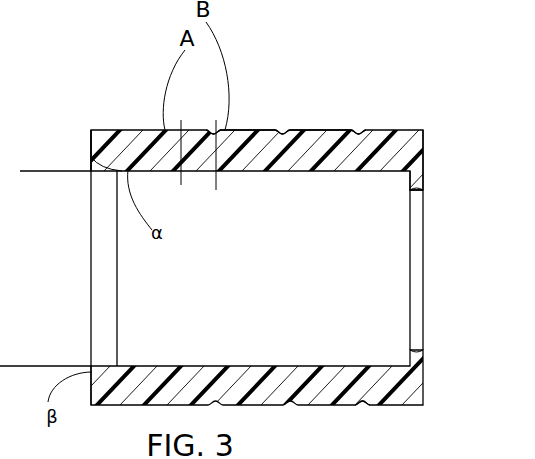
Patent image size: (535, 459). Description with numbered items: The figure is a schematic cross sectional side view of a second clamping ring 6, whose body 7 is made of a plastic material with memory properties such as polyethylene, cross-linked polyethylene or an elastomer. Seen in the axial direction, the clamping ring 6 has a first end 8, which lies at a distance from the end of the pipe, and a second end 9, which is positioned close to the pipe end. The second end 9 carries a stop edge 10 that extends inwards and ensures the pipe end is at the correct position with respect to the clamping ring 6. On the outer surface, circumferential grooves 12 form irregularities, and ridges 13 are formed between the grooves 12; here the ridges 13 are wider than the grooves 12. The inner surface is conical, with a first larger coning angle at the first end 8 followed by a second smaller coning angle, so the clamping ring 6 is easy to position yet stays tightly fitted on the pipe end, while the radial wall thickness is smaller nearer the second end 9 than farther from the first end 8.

The clamping ring 6 is at (362, 101).
The body 7 is at (133, 147).
The first end 8 is at (91, 153).
The second end 9 is at (423, 150).
The stop edge 10 is at (422, 190).
The grooves 12 is at (213, 131).
The ridges 13 is at (245, 130).